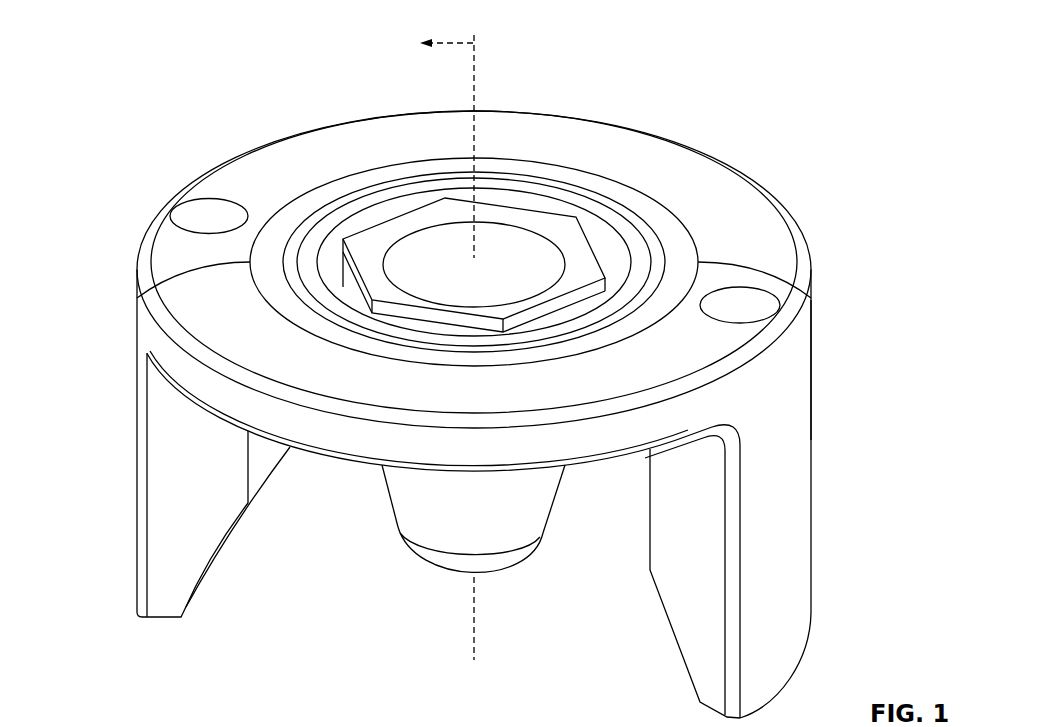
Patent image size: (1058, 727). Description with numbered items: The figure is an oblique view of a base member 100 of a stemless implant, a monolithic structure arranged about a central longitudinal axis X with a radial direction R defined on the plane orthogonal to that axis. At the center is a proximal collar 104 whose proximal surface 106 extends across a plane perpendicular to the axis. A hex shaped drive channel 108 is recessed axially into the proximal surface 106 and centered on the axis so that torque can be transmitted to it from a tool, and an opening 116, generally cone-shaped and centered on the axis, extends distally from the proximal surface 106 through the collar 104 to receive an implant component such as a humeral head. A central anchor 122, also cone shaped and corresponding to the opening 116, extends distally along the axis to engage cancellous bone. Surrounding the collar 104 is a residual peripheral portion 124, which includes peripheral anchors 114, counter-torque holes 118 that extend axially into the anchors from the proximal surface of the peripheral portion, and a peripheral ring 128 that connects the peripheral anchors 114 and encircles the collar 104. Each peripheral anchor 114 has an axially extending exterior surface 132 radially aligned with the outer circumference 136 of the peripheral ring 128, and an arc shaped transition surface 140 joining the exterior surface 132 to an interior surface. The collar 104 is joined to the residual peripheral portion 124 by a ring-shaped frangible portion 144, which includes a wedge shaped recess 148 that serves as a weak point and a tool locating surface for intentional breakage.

The base member 100 is at (116, 84).
The proximal collar 104 is at (325, 218).
The proximal surface 106 is at (420, 217).
The hex shaped drive channel 108 is at (552, 205).
The peripheral anchor 114 is at (137, 433).
The opening 116 is at (480, 235).
The counter-torque hole 118 is at (210, 217).
The central anchor 122 is at (498, 568).
The residual peripheral portion 124 is at (533, 110).
The peripheral ring 128 is at (223, 163).
The exterior surface 132 is at (790, 470).
The outer circumference 136 is at (790, 367).
The arc shaped transition surface 140 is at (225, 537).
The frangible portion 144 is at (137, 298).
The recess 148 is at (634, 220).